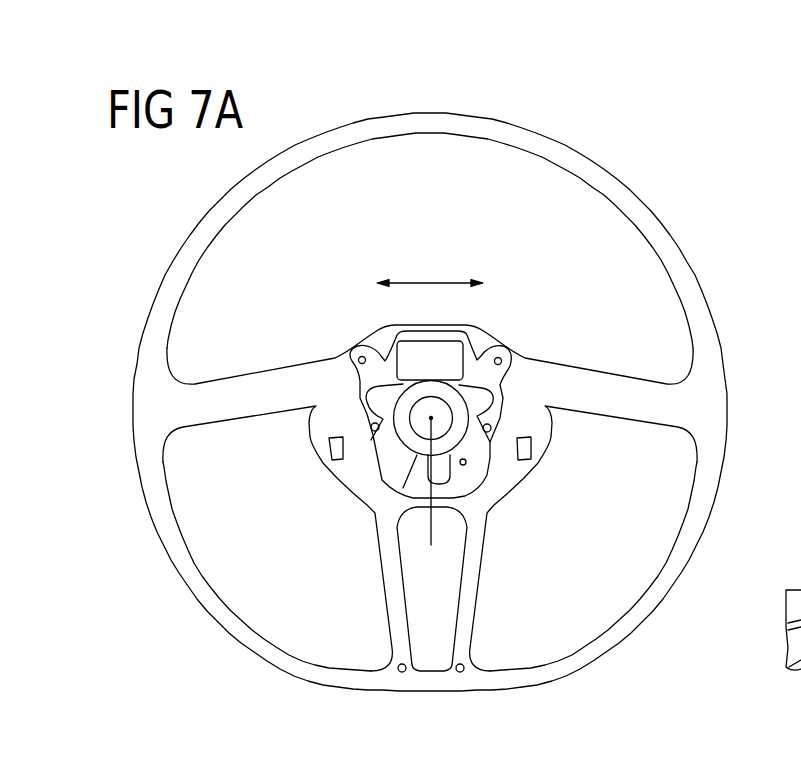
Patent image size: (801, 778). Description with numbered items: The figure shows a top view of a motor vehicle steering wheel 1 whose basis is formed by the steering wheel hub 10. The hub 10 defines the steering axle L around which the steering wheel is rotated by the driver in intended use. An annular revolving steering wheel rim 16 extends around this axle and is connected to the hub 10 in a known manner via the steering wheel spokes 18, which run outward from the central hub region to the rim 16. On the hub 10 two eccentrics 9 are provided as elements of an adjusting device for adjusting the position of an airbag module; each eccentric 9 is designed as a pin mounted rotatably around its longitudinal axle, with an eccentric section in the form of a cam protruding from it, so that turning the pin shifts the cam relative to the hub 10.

The steering wheel 1 is at (666, 219).
The steering wheel rim 16 is at (715, 358).
The steering wheel spokes 18 is at (272, 390).
The steering wheel hub 10 is at (417, 482).
The eccentric 9 is at (358, 357).